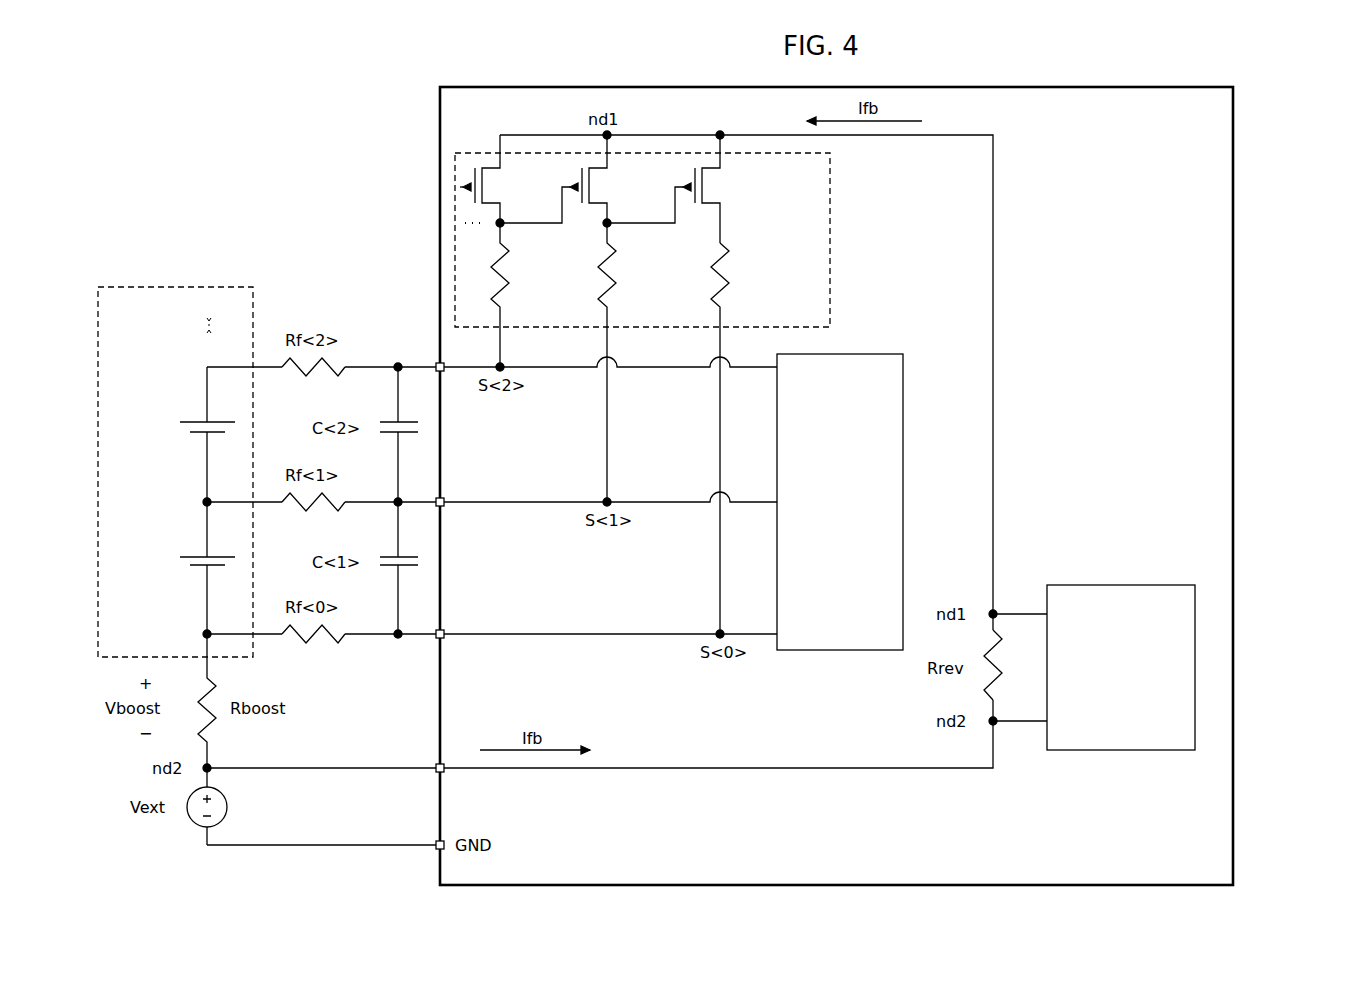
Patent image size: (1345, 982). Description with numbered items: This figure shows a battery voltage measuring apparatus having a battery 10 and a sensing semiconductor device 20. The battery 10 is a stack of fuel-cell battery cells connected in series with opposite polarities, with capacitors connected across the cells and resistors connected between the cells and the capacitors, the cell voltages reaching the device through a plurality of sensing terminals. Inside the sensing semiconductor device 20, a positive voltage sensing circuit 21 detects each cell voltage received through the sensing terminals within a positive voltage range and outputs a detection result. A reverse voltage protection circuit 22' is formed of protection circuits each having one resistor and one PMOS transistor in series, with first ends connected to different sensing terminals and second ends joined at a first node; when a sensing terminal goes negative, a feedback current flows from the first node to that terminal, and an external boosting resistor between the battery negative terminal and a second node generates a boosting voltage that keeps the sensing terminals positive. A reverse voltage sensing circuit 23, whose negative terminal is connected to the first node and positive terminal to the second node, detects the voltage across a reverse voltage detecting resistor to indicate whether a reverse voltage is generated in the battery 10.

The battery 10 is at (208, 287).
The sensing semiconductor device 20 is at (1236, 126).
The positive voltage sensing circuit 21 is at (868, 354).
The reverse voltage protection circuit 22' is at (676, 384).
The reverse voltage sensing circuit 23 is at (1153, 585).